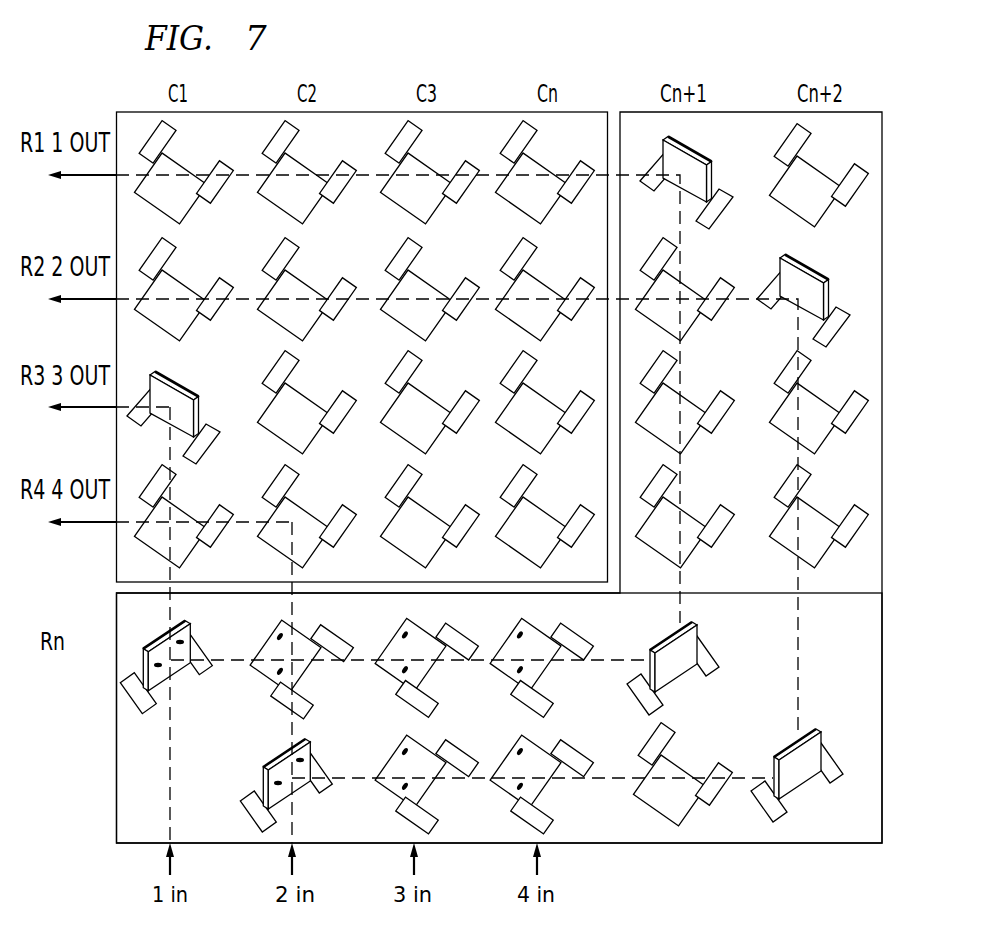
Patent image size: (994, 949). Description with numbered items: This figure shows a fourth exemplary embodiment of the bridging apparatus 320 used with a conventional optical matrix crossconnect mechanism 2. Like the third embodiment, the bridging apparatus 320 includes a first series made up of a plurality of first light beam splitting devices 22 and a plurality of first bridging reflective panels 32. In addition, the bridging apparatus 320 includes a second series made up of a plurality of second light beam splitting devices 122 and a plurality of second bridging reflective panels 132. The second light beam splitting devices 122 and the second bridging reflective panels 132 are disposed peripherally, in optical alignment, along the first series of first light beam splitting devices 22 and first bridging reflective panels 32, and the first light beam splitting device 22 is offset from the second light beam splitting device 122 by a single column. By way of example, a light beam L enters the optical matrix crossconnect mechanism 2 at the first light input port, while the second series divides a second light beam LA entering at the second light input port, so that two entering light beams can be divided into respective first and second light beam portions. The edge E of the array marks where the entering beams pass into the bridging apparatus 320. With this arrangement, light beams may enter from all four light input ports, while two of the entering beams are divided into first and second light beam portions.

The optical matrix crossconnect mechanism 2 is at (115, 111).
The first light beam splitting device 22 is at (503, 643).
The first bridging reflective panel 32 is at (675, 647).
The second light beam splitting device 122 is at (505, 758).
The second bridging reflective panel 132 is at (802, 760).
The bridging apparatus 320 is at (120, 721).
The light beam L is at (171, 703).
The second light beam LA is at (292, 817).
The edge E is at (163, 843).